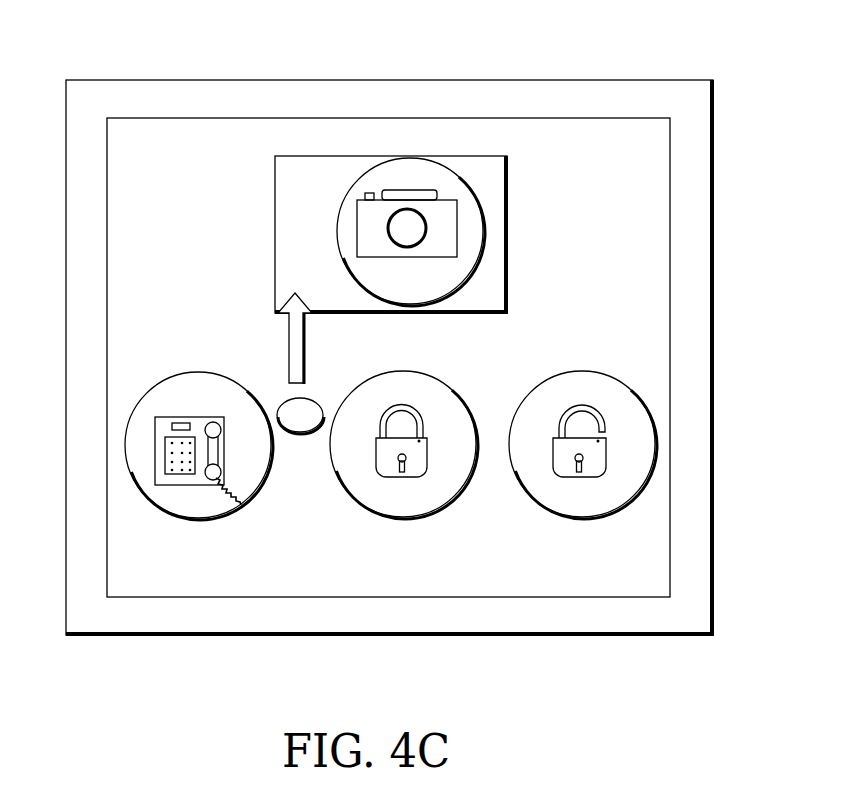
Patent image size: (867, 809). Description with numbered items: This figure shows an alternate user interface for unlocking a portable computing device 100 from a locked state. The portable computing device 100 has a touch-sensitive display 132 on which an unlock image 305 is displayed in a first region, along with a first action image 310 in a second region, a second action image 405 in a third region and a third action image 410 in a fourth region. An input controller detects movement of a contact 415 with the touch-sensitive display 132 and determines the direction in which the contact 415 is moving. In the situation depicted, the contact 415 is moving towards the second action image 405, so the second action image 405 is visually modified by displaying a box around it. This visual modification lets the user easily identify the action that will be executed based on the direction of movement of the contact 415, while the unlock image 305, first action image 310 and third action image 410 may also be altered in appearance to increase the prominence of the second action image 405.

The portable computing device 100 is at (684, 80).
The touch-sensitive display 132 is at (537, 117).
The unlock image 305 is at (402, 520).
The first action image 310 is at (588, 520).
The second action image 405 is at (422, 292).
The third action image 410 is at (197, 522).
The contact 415 is at (300, 433).